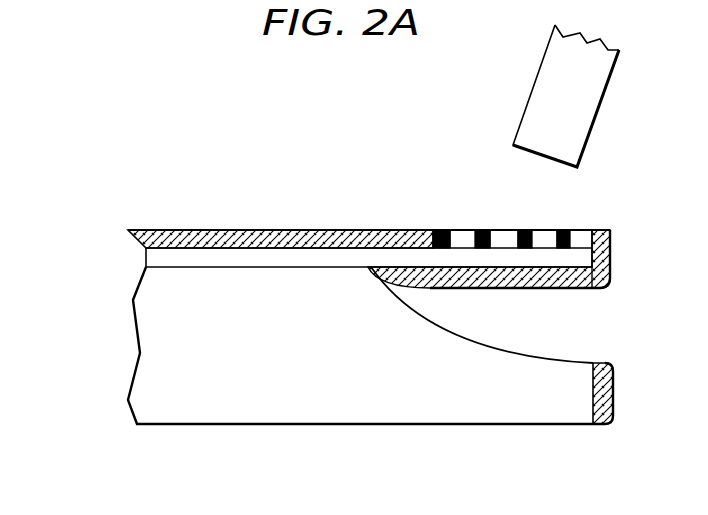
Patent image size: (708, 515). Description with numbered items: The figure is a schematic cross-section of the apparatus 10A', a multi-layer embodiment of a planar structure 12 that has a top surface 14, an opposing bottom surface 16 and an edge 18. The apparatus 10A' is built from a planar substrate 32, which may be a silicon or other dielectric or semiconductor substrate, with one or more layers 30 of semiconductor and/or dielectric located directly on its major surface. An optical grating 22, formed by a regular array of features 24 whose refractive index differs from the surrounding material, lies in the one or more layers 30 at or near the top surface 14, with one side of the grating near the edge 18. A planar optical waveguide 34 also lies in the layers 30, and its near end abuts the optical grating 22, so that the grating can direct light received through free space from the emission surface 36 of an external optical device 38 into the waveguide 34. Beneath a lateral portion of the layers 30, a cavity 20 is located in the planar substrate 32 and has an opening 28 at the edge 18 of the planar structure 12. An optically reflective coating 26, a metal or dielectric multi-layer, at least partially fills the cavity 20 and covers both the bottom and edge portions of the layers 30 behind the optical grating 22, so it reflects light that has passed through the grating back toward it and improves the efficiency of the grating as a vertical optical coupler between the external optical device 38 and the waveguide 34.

The apparatus 10A' is at (353, 136).
The planar structure 12 is at (64, 233).
The top surface 14 is at (272, 192).
The bottom surface 16 is at (344, 441).
The edge 18 is at (613, 400).
The cavity 20 is at (516, 326).
The optical grating 22 is at (578, 228).
The features 24 is at (431, 233).
The optically reflective coating 26 is at (607, 272).
The opening 28 is at (608, 336).
The one or more layers 30 is at (120, 230).
The planar substrate 32 is at (270, 357).
The planar optical waveguide 34 is at (226, 238).
The emission surface 36 is at (528, 153).
The external optical device 38 is at (577, 111).